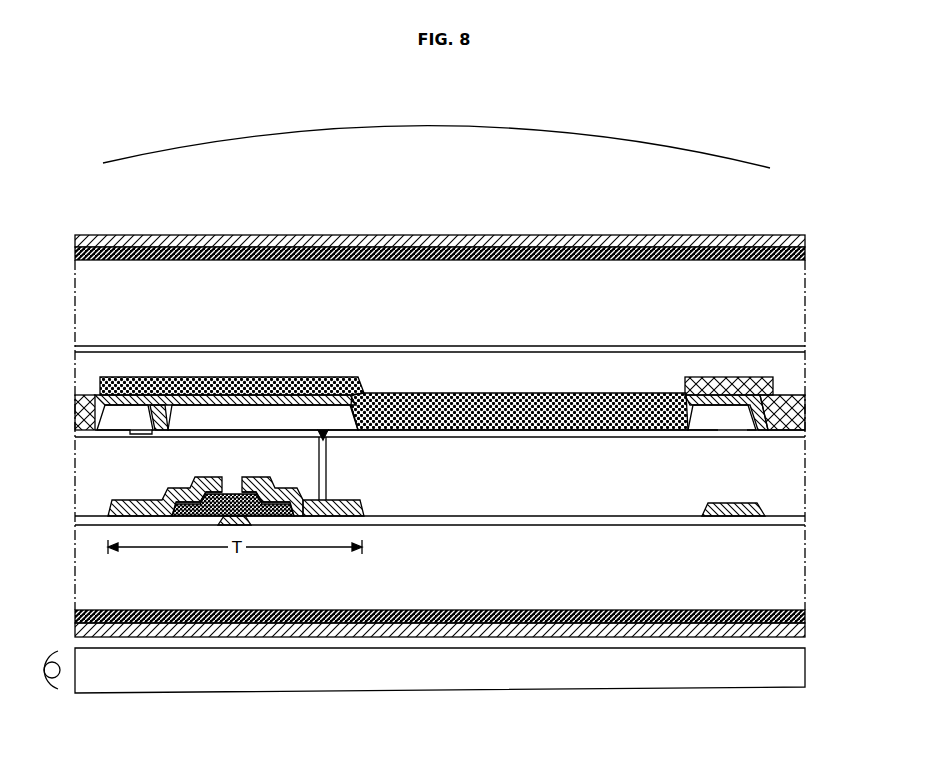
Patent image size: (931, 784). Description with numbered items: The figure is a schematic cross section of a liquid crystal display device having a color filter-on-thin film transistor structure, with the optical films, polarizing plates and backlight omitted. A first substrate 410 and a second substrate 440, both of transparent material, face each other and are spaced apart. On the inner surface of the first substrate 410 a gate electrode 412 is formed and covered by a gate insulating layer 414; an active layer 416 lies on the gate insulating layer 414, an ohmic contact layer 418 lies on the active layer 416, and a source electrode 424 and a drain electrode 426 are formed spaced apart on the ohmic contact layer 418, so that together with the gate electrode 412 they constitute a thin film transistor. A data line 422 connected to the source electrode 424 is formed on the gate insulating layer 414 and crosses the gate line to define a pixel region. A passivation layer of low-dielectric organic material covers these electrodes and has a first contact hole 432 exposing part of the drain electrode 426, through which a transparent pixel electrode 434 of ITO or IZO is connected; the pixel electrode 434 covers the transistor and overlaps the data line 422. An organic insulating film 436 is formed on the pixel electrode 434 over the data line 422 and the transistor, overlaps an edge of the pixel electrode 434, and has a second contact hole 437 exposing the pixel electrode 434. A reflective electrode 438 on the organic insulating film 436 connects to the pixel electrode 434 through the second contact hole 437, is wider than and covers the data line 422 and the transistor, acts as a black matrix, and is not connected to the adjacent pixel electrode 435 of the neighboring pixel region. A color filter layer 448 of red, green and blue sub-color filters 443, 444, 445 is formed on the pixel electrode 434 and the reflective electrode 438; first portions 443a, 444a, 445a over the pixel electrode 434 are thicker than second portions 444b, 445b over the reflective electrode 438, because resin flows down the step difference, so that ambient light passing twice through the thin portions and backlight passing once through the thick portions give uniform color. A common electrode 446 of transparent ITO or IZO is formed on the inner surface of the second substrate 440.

The first substrate 410 is at (782, 588).
The gate electrode 412 is at (226, 523).
The gate insulating layer 414 is at (607, 520).
The active layer 416 is at (230, 497).
The ohmic contact layer 418 is at (192, 483).
The data line 422 is at (737, 503).
The source electrode 424 is at (205, 476).
The drain electrode 426 is at (303, 505).
The first contact hole 432 is at (327, 425).
The pixel electrode 434 is at (598, 435).
The adjacent pixel electrode 435 is at (787, 438).
The organic insulating film 436 is at (230, 422).
The second contact hole 437 is at (160, 407).
The reflective electrode 438 is at (142, 393).
The second substrate 440 is at (643, 287).
The red sub-color filter 443 is at (97, 298).
The first portion of red sub-color filter 443a is at (92, 395).
The green sub-color filter 444 is at (394, 300).
The first portion of green sub-color filter 444a is at (435, 413).
The second portion of green sub-color filter 444b is at (266, 383).
The blue sub-color filter 445 is at (752, 302).
The first portion of blue sub-color filter 445a is at (800, 397).
The second portion of blue sub-color filter 445b is at (743, 387).
The common electrode 446 is at (485, 348).
The color filter layer 448 is at (293, 167).